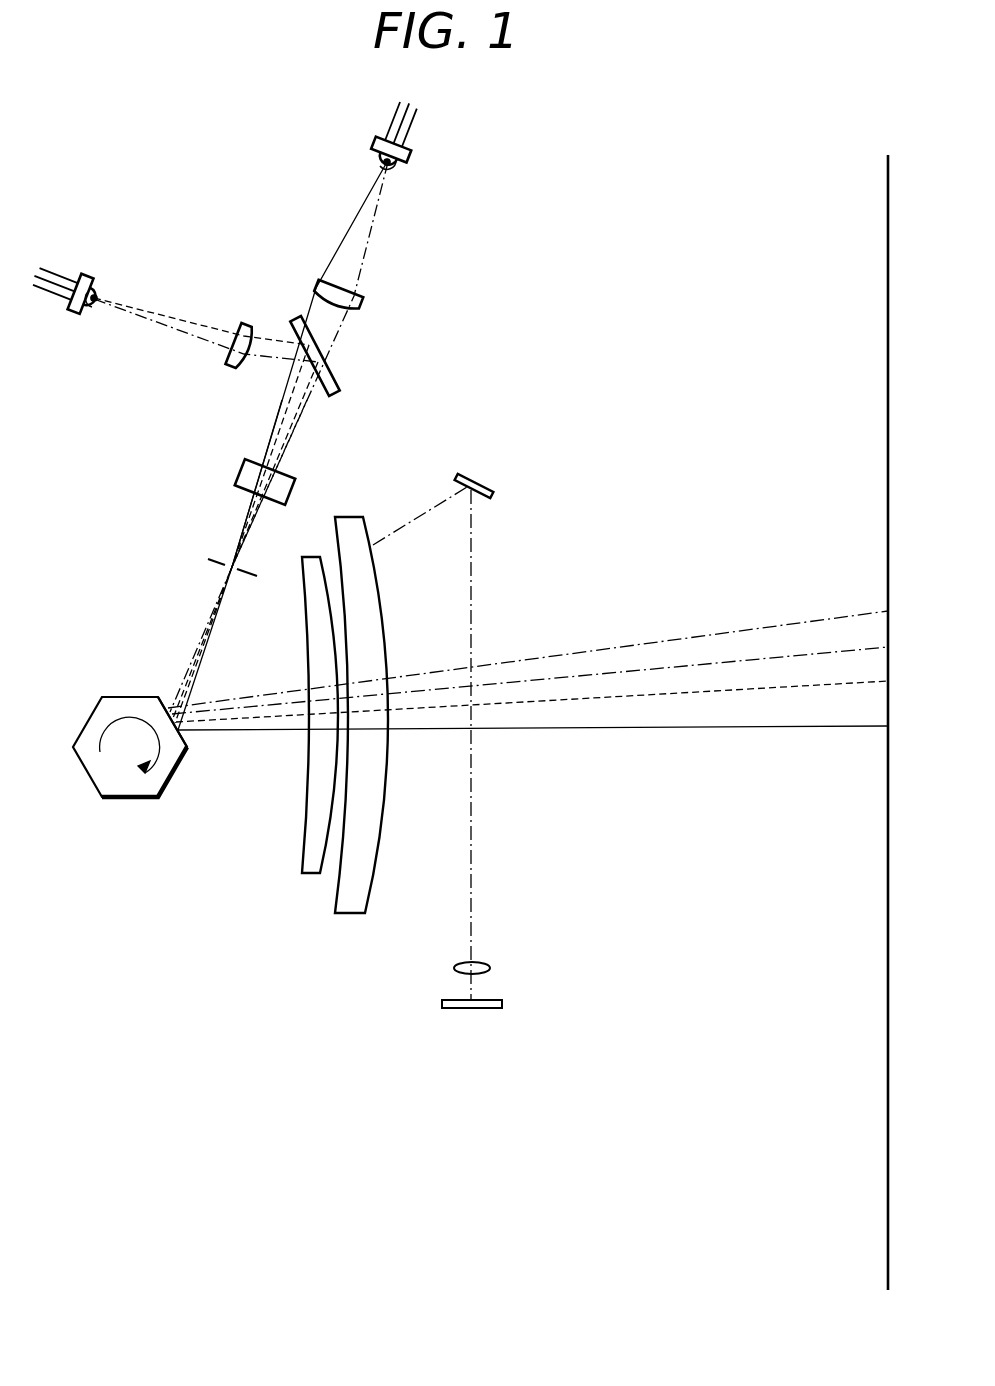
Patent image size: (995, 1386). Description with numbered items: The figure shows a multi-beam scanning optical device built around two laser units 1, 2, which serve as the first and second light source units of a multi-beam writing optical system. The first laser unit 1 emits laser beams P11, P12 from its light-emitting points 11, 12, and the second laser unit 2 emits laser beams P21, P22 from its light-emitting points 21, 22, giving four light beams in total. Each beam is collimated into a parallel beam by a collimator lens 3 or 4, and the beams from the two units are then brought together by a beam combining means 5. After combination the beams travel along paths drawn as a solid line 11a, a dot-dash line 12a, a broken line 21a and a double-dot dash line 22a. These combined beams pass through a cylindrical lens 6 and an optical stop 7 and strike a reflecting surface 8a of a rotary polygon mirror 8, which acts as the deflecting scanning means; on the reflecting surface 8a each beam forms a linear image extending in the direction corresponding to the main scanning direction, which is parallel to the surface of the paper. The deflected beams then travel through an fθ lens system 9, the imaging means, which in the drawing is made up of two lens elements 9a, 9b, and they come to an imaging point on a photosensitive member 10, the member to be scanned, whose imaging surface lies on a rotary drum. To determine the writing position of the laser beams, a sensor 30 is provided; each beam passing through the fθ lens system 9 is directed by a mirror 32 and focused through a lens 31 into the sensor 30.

The laser unit 1 is at (408, 151).
The light-emitting point 11 is at (379, 161).
The light-emitting point 12 is at (398, 164).
The laser beam P11 is at (364, 203).
The laser beam P12 is at (379, 203).
The laser unit 2 is at (79, 282).
The light-emitting point 21 is at (97, 293).
The light-emitting point 22 is at (87, 310).
The laser beam P21 is at (183, 316).
The laser beam P22 is at (133, 316).
The collimator lens 3 is at (360, 300).
The collimator lens 4 is at (250, 323).
The beam combining means 5 is at (334, 368).
The cylindrical lens 6 is at (296, 483).
The optical stop 7 is at (216, 559).
The rotary polygon mirror 8 is at (88, 721).
The reflecting surface 8a is at (185, 748).
The solid line 11a is at (285, 400).
The dot-dash line 12a is at (312, 402).
The broken line 21a is at (280, 435).
The double-dot dash line 22a is at (304, 436).
The fθ lens system 9 is at (327, 780).
The fθ lens 9a is at (303, 877).
The fθ lens 9b is at (352, 915).
The photosensitive member 10 is at (886, 220).
The sensor 30 is at (503, 1008).
The lens 31 is at (491, 967).
The mirror 32 is at (488, 485).